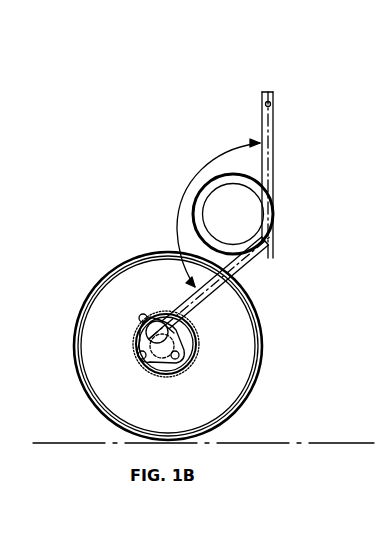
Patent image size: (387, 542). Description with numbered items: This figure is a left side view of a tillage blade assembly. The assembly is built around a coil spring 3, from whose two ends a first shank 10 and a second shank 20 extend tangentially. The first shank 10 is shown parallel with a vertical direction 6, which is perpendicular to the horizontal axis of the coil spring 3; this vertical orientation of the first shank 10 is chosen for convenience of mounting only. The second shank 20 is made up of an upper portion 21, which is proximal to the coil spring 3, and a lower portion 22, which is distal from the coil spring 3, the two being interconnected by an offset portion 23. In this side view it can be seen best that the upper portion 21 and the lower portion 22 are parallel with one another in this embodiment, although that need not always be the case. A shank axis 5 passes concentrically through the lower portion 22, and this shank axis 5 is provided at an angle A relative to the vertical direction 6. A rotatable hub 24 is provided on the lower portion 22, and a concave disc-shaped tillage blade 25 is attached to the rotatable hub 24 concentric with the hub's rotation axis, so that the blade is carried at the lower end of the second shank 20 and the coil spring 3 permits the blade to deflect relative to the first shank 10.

The coil spring 3 is at (203, 189).
The shank axis 5 is at (297, 236).
The vertical direction 6 is at (301, 64).
The first shank 10 is at (303, 175).
The second shank 20 is at (242, 286).
The upper portion 21 is at (242, 296).
The lower portion 22 is at (199, 375).
The offset portion 23 is at (238, 350).
The rotatable hub 24 is at (102, 282).
The tillage blade 25 is at (198, 346).